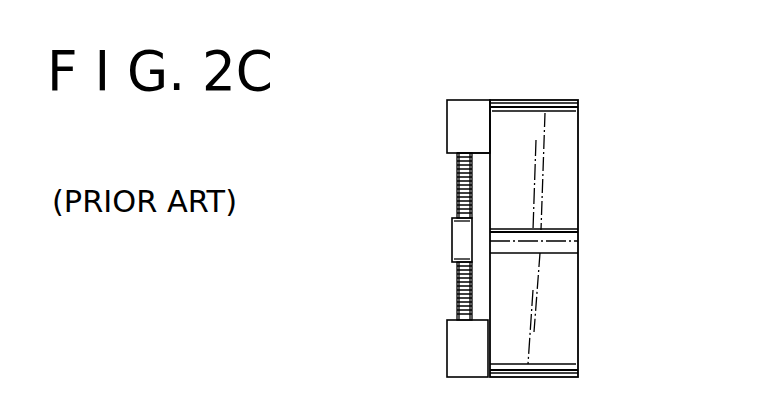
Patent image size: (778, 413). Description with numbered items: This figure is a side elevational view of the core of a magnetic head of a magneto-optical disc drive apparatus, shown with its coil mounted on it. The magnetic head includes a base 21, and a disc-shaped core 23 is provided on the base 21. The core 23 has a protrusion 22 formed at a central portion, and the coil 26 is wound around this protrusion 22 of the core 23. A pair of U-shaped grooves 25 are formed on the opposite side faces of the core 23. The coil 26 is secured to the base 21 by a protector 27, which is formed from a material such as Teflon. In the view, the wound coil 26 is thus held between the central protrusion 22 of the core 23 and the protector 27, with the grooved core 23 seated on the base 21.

The base 21 is at (568, 329).
The protrusion 22 is at (468, 240).
The core 23 is at (488, 197).
The U-shaped grooves 25 is at (580, 241).
The coil 26 is at (460, 173).
The protector 27 is at (458, 350).